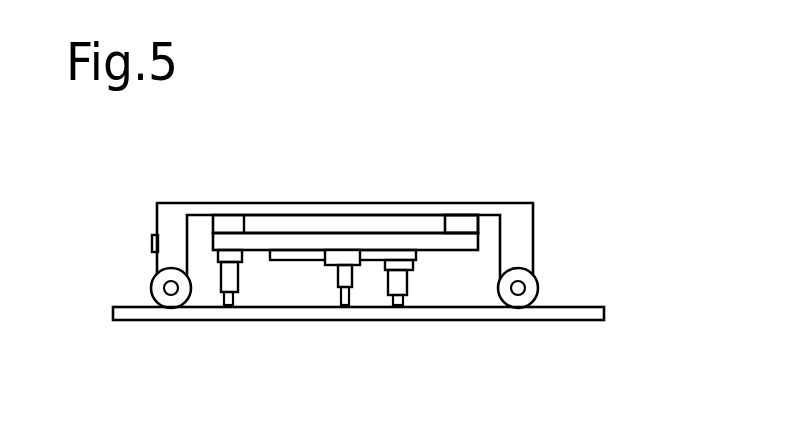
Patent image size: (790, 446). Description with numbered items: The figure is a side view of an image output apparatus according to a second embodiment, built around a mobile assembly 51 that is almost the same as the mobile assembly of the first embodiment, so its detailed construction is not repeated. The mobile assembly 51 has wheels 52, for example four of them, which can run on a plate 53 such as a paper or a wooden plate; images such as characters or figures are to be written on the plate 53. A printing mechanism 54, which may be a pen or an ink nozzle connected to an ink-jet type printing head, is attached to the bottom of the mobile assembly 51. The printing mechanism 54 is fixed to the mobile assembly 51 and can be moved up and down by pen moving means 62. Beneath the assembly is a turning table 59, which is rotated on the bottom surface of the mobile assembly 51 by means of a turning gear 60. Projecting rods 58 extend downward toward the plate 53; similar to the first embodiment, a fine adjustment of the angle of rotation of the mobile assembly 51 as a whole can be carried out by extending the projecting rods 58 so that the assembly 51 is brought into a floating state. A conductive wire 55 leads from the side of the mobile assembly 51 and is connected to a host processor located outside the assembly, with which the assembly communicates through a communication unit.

The mobile assembly 51 is at (302, 140).
The wheels 52 is at (538, 282).
The plate 53 is at (607, 310).
The printing mechanism 54 is at (340, 306).
The conductive wire 55 is at (152, 243).
The projecting rods 58 is at (223, 293).
The turning table 59 is at (378, 235).
The turning gear 60 is at (462, 223).
The pen moving means 62 is at (338, 283).